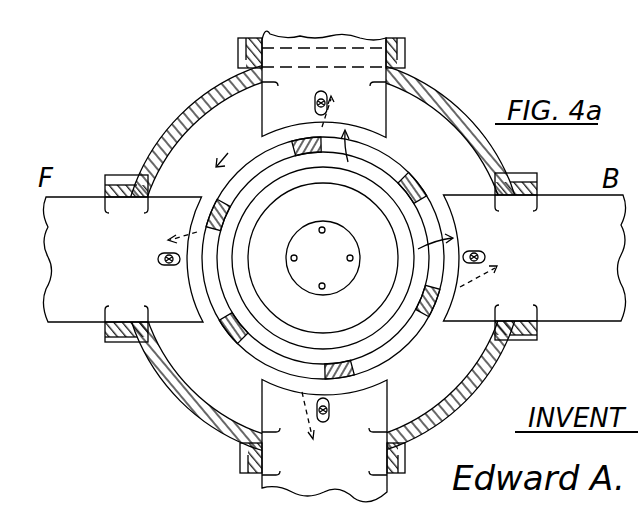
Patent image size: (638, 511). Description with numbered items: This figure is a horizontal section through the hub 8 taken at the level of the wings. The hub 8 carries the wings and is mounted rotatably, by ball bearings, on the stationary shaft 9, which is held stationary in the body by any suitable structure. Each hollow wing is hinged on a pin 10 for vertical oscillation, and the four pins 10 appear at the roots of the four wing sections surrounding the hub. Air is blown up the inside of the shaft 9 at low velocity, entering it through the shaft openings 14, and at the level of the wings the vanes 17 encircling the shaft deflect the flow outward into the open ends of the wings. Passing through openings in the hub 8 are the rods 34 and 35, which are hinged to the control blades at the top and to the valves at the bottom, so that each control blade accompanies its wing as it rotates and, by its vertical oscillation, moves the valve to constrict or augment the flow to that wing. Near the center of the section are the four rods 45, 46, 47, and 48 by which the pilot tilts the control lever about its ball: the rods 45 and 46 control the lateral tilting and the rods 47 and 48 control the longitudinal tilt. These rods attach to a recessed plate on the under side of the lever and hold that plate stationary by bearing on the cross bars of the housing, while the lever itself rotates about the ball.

The hub 8 is at (183, 105).
The pin 10 is at (313, 66).
The stationary shaft 9 is at (413, 175).
The shaft openings 14 is at (404, 338).
The vanes 17 is at (271, 273).
The rod 46 is at (322, 227).
The rod 48 is at (353, 258).
The rod 47 is at (298, 264).
The rod 45 is at (326, 287).
The rod 34 is at (166, 266).
The rod 35 is at (481, 250).